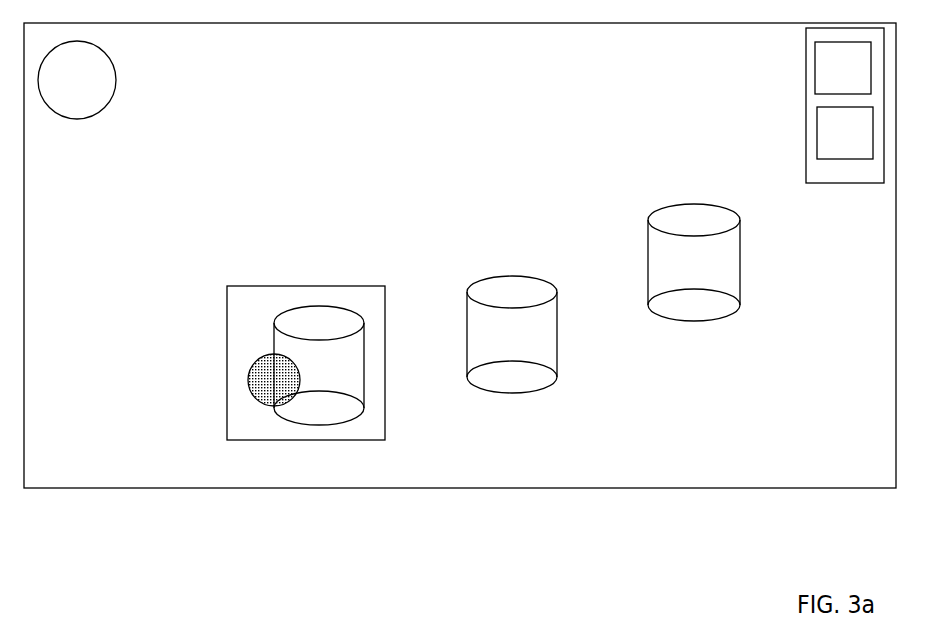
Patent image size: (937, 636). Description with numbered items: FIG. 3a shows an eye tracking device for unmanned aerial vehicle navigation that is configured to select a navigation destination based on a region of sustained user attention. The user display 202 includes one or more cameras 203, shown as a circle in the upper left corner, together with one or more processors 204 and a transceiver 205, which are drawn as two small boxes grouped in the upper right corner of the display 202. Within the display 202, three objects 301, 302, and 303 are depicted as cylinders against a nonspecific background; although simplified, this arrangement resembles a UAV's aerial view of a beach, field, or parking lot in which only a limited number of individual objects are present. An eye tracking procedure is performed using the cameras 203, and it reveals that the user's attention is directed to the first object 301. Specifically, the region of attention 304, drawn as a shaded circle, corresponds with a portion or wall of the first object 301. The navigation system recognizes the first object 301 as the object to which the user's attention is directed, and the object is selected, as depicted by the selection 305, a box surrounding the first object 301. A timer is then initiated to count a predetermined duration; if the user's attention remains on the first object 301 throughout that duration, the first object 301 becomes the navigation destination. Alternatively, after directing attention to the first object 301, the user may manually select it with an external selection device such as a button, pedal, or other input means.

The user display 202 is at (460, 274).
The camera 203 is at (77, 80).
The processor 204 is at (843, 68).
The transceiver 205 is at (845, 133).
The first object 301 is at (314, 308).
The second object 302 is at (510, 270).
The third object 303 is at (692, 198).
The region of attention 304 is at (246, 380).
The object selection 305 is at (214, 435).